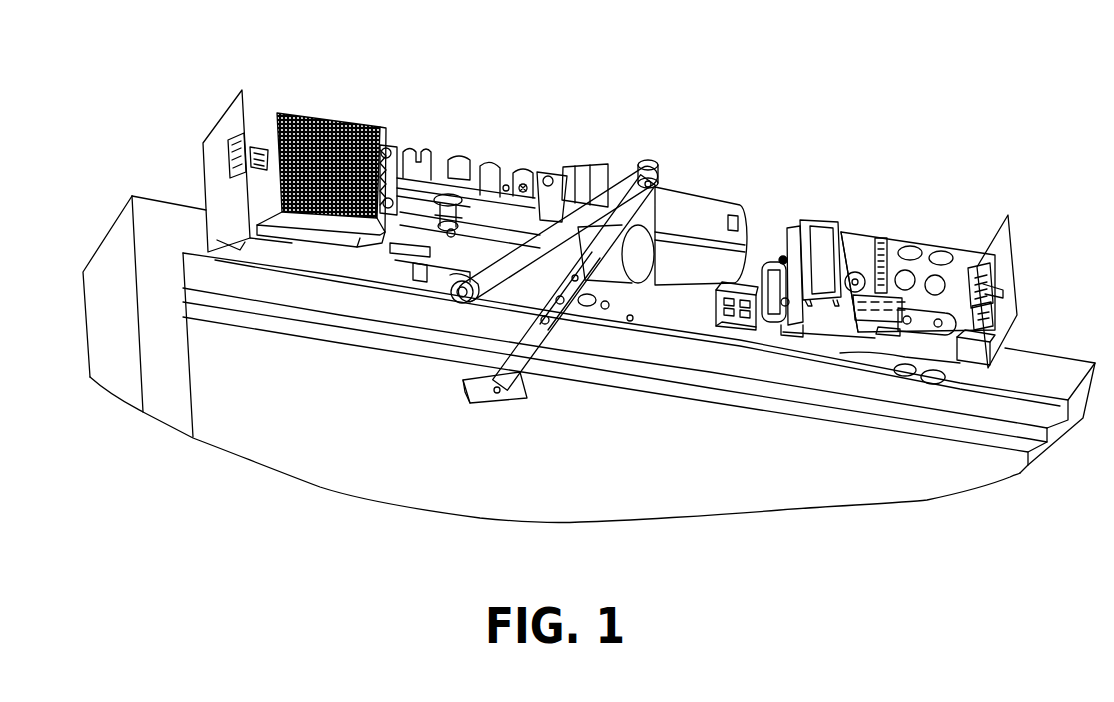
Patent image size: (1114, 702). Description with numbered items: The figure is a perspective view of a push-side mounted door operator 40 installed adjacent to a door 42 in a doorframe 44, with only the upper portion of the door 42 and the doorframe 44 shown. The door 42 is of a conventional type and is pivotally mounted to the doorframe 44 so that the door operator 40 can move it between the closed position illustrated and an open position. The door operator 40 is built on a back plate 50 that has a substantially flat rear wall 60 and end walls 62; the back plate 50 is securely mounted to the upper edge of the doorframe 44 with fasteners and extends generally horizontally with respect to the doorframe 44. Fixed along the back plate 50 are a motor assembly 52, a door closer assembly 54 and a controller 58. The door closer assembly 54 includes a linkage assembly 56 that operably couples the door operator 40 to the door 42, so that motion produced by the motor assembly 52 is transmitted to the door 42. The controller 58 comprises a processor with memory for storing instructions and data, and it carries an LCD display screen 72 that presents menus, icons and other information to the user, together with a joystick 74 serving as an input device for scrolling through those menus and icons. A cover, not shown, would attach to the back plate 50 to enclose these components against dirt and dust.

The door operator 40 is at (814, 152).
The door 42 is at (712, 486).
The doorframe 44 is at (127, 353).
The back plate 50 is at (262, 150).
The motor assembly 52 is at (673, 205).
The door closer assembly 54 is at (475, 167).
The linkage assembly 56 is at (450, 310).
The controller 58 is at (860, 247).
The rear wall 60 is at (307, 122).
The end walls 62 is at (225, 127).
The LCD display screen 72 is at (827, 237).
The joystick 74 is at (880, 240).